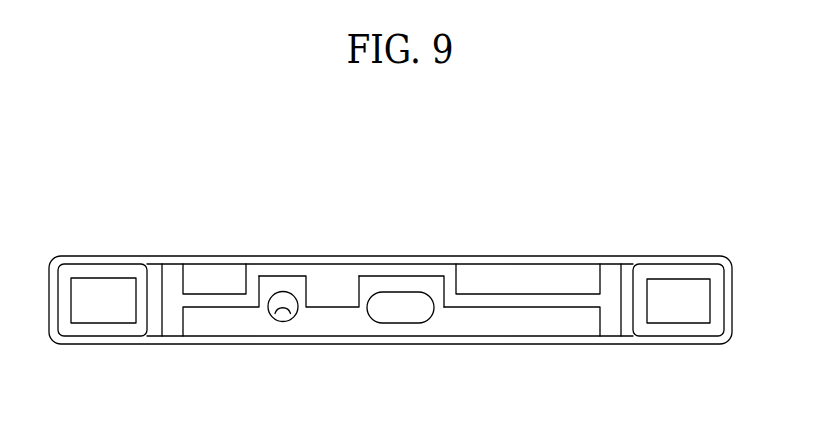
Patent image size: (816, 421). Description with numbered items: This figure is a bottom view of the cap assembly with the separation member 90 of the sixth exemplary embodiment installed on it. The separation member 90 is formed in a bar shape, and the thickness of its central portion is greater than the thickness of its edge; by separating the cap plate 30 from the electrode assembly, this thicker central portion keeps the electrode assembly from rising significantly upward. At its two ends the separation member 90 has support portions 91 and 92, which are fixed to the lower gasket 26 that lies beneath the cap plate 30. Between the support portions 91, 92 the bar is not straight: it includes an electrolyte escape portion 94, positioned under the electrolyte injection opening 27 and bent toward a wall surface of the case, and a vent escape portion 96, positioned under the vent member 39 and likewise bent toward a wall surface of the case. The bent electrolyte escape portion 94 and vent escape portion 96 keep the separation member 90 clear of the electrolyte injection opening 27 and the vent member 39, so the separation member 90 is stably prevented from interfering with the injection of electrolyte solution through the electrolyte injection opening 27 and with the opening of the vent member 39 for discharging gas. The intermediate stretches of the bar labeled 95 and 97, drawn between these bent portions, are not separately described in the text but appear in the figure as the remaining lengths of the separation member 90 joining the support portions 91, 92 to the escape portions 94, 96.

The lower gasket 26 is at (67, 274).
The cap plate 30 is at (117, 257).
The support portion 92 is at (172, 275).
The electrolyte escape portion 94 is at (279, 271).
The second pattern portion 95 is at (218, 303).
The vent escape portion 96 is at (401, 271).
The fourth pattern portion 97 is at (543, 302).
The separation member 90 is at (516, 280).
The support portion 91 is at (611, 275).
The electrolyte injection opening 27 is at (290, 316).
The vent member 39 is at (402, 309).